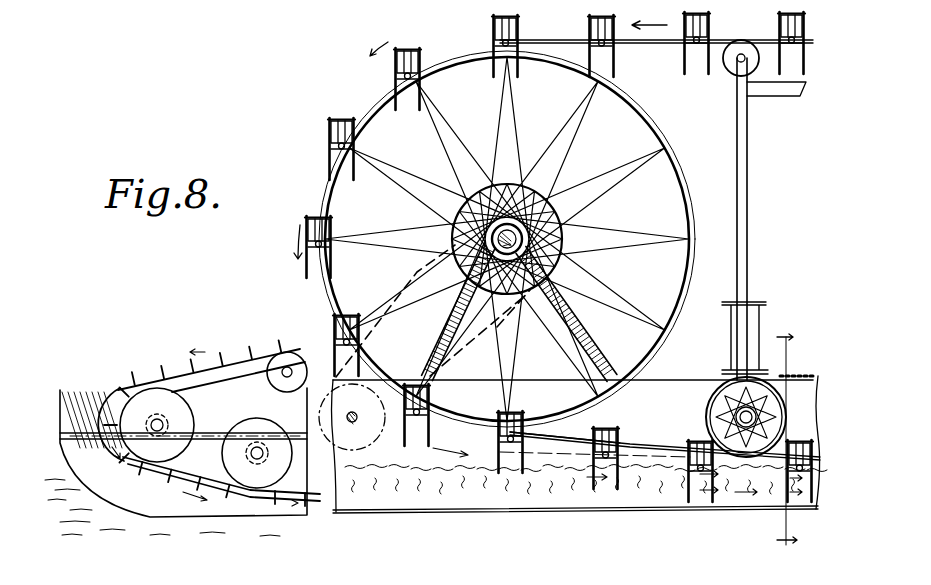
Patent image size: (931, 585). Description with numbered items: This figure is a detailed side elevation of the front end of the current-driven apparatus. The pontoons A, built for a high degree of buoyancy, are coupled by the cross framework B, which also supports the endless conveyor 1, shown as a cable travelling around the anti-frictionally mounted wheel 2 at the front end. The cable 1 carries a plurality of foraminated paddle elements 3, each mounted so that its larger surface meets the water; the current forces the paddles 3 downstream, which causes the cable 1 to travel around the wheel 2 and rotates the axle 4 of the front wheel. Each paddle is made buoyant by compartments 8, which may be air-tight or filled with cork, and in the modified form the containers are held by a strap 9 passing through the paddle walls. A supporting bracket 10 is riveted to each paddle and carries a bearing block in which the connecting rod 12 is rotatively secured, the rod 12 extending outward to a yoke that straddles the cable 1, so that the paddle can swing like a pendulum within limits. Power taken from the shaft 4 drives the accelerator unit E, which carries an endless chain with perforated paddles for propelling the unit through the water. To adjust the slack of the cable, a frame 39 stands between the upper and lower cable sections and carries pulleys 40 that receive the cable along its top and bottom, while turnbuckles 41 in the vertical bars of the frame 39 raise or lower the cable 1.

The endless conveyor 1 is at (556, 44).
The wheel 2 is at (688, 198).
The foraminated paddle element 3 is at (520, 30).
The axle 4 is at (565, 203).
The compartment 8 is at (622, 432).
The strap 9 is at (786, 444).
The supporting bracket 10 is at (690, 486).
The connecting rod 12 is at (685, 470).
The frame 39 is at (783, 88).
The pulley 40 is at (730, 68).
The turnbuckle 41 is at (768, 295).
The pontoon A is at (676, 375).
The cross framework B is at (802, 372).
The accelerator unit E is at (235, 350).